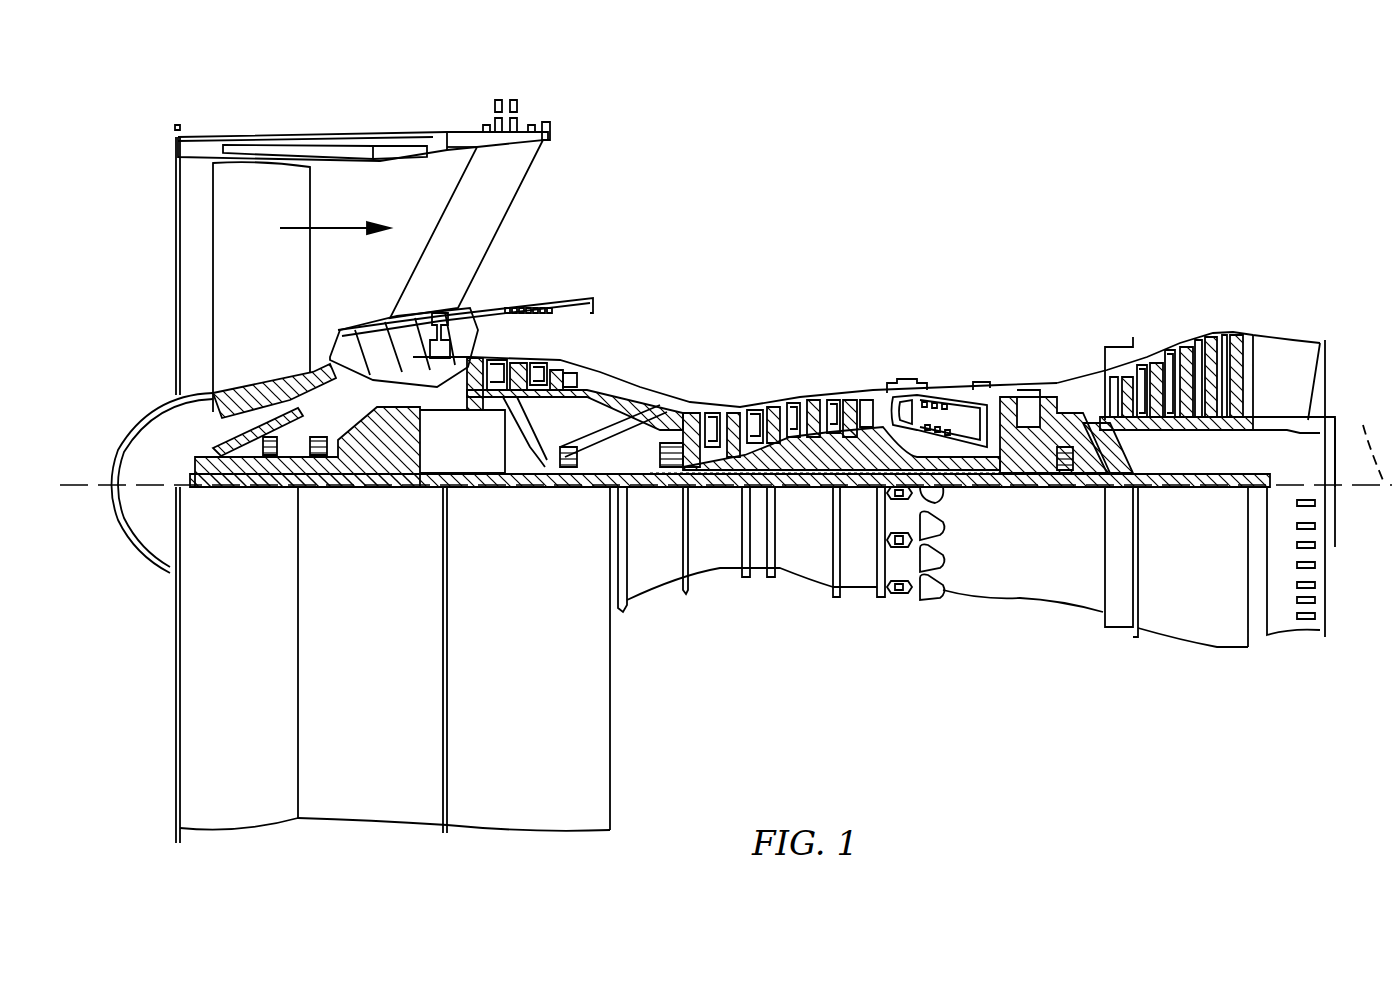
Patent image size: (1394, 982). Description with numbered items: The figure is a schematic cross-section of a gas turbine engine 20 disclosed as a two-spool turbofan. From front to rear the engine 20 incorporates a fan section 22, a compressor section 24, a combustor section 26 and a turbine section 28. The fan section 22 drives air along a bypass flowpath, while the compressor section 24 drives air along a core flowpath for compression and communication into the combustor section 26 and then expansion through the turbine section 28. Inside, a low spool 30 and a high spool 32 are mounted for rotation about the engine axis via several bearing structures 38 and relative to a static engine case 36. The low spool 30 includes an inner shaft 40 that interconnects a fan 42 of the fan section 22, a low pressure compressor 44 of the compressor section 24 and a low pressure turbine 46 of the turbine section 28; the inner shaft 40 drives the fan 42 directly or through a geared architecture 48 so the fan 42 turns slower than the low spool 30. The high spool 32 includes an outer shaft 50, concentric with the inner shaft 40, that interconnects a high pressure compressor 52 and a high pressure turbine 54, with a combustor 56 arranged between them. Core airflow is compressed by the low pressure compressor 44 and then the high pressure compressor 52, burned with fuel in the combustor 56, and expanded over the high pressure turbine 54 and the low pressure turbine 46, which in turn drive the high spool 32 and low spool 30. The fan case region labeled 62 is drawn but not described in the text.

The gas turbine engine 20 is at (986, 180).
The fan section 22 is at (448, 112).
The compressor section 24 is at (458, 280).
The combustor section 26 is at (887, 280).
The turbine section 28 is at (1257, 280).
The low spool 30 is at (810, 487).
The high spool 32 is at (858, 447).
The static engine case 36 is at (862, 590).
The bearing structures 38 is at (265, 487).
The inner shaft 40 is at (643, 478).
The fan 42 is at (252, 325).
The low pressure compressor 44 is at (537, 370).
The low pressure turbine 46 is at (1182, 348).
The geared architecture 48 is at (400, 470).
The outer shaft 50 is at (957, 487).
The high pressure compressor 52 is at (790, 447).
The high pressure turbine 54 is at (1028, 390).
The combustor 56 is at (947, 417).
The fan case 62 is at (450, 147).